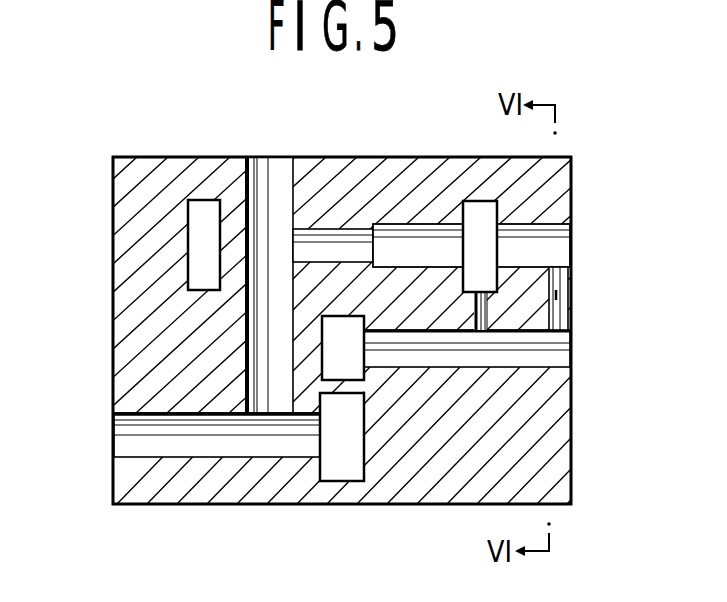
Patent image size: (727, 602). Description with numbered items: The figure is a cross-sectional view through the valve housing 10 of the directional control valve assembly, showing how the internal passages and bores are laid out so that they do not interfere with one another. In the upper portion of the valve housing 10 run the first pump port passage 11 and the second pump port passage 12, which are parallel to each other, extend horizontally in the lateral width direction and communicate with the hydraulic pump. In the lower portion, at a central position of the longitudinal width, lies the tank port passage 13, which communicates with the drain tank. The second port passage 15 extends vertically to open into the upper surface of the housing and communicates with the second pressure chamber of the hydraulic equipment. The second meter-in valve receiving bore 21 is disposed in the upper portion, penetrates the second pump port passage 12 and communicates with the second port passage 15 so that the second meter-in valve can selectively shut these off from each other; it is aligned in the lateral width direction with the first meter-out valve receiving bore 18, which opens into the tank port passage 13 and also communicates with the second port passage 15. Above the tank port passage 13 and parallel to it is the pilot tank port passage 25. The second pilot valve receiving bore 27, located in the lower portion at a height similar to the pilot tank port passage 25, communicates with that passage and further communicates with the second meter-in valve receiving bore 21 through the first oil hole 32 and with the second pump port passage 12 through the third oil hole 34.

The valve housing 10 is at (338, 168).
The first pump port passage 11 is at (188, 240).
The second pump port passage 12 is at (462, 203).
The tank port passage 13 is at (348, 482).
The second port passage 15 is at (259, 176).
The first meter-out valve receiving bore 18 is at (214, 458).
The second meter-in valve receiving bore 21 is at (571, 225).
The pilot tank port passage 25 is at (350, 377).
The second pilot valve receiving bore 27 is at (553, 366).
The first oil hole 32 is at (548, 301).
The third oil hole 34 is at (472, 313).